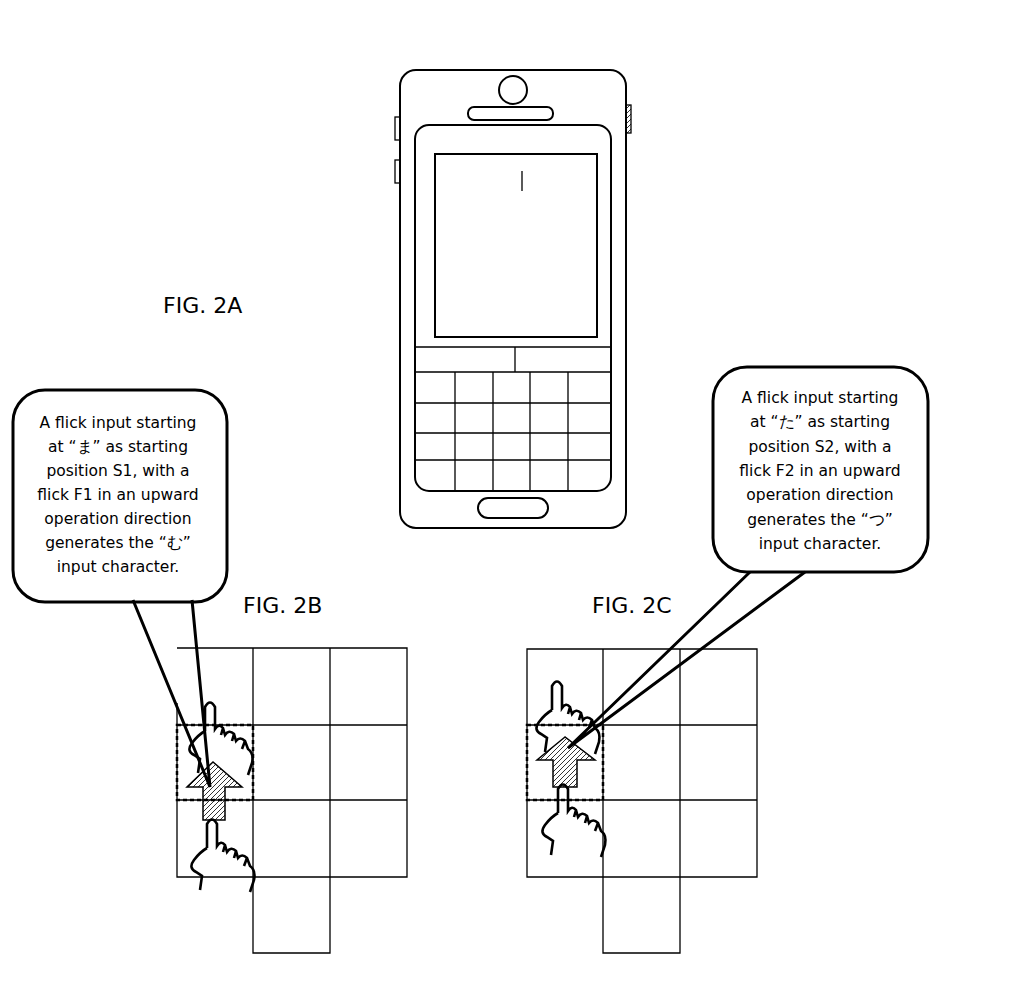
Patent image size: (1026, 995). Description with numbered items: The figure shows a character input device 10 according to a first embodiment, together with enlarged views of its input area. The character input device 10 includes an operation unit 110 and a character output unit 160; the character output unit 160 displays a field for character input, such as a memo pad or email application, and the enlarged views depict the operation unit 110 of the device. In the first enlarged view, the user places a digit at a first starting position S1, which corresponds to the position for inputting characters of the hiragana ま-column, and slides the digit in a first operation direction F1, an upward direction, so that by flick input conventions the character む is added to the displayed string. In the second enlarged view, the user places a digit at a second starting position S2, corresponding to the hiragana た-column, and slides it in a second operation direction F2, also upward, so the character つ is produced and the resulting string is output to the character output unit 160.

In FIG. 2A, the character input device 10 is at (634, 57).
In FIG. 2A, the character output unit 160 is at (388, 138).
In FIG. 2A, the operation unit 110 is at (388, 353).
In FIG. 2B, the operation unit 110 is at (407, 648).
In FIG. 2C, the operation unit 110 is at (757, 649).
In FIG. 2B, the first operation direction F1 is at (194, 785).
In FIG. 2B, the first starting position S1 is at (199, 767).
In FIG. 2C, the second operation direction F2 is at (544, 757).
In FIG. 2C, the second starting position S2 is at (548, 762).